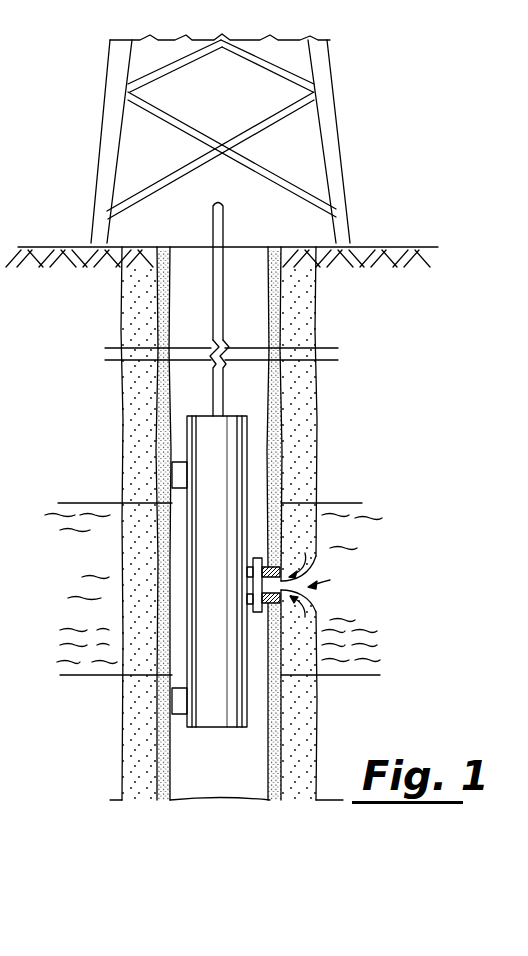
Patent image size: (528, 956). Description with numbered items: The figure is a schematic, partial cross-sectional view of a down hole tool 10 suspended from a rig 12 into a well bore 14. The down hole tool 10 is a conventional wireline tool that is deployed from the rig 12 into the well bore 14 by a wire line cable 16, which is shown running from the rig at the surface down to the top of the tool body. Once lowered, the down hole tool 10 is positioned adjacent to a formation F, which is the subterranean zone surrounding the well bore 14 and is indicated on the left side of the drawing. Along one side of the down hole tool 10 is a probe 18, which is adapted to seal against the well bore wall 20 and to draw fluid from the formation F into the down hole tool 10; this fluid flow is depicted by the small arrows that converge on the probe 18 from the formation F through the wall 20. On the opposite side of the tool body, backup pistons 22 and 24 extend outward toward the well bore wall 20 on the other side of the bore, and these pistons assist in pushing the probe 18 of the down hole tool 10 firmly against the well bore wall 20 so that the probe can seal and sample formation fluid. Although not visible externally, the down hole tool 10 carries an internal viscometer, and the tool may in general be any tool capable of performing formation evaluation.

The down hole tool 10 is at (252, 498).
The rig 12 is at (339, 143).
The well bore 14 is at (269, 272).
The wire line cable 16 is at (225, 220).
The probe 18 is at (266, 566).
The well bore wall 20 is at (280, 647).
The backup piston 22 is at (178, 462).
The backup piston 24 is at (178, 715).
The formation F is at (65, 652).